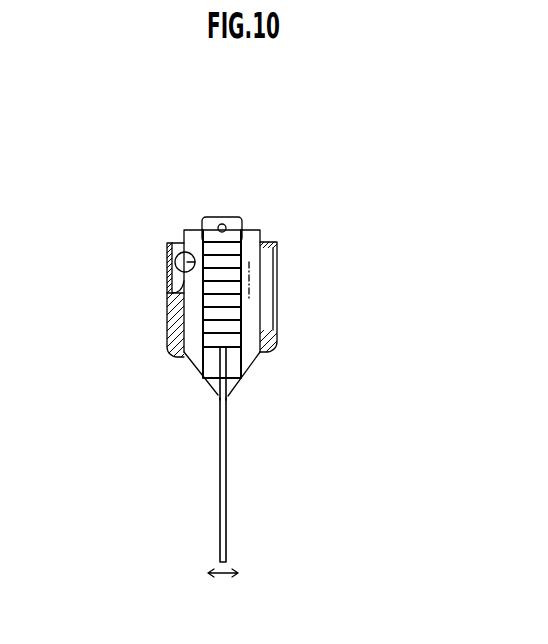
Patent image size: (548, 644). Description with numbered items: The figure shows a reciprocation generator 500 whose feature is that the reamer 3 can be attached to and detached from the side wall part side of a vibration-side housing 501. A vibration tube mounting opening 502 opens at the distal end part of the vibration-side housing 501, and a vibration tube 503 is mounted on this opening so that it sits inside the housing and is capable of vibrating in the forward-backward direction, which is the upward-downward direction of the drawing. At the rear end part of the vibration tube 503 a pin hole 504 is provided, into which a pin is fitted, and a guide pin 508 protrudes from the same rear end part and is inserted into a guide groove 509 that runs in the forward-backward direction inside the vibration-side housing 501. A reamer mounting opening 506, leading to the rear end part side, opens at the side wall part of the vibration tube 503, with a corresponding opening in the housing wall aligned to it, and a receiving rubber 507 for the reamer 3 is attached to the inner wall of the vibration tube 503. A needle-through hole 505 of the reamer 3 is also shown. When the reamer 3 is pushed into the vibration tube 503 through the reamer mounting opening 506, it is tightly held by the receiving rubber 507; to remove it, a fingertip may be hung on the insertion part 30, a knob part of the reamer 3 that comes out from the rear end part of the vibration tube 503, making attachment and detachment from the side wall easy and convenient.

The reciprocation generator 500 is at (378, 137).
The insertion part 30 is at (223, 215).
The pin hole 504 is at (248, 265).
The reamer mounting opening 506 is at (243, 313).
The receiving rubber 507 is at (243, 363).
The guide pin 508 is at (175, 264).
The guide groove 509 is at (173, 292).
The vibration-side housing 501 is at (170, 348).
The vibration tube mounting opening 502 is at (183, 358).
The needle-through hole 505 is at (243, 393).
The vibration tube 503 is at (208, 390).
The reamer 3 is at (267, 535).